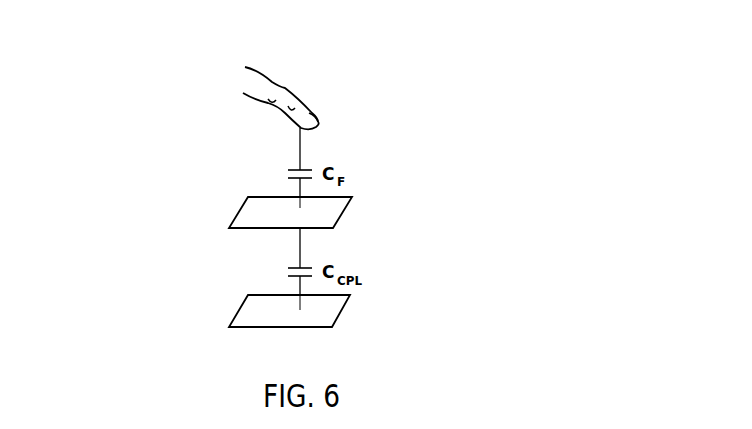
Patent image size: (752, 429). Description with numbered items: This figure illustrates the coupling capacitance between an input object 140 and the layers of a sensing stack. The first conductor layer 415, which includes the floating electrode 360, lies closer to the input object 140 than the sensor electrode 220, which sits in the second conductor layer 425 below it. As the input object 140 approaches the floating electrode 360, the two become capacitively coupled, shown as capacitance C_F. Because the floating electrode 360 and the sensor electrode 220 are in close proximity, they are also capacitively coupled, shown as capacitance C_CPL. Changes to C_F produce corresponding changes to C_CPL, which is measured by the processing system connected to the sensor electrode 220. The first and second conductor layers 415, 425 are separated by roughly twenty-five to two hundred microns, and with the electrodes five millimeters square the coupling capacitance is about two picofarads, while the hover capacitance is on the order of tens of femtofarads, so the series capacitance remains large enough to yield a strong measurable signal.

The input object 140 is at (301, 99).
The floating electrode 360 is at (348, 210).
The sensor electrode 220 is at (348, 308).
The first conductor layer 415 is at (220, 248).
The second conductor layer 425 is at (220, 347).